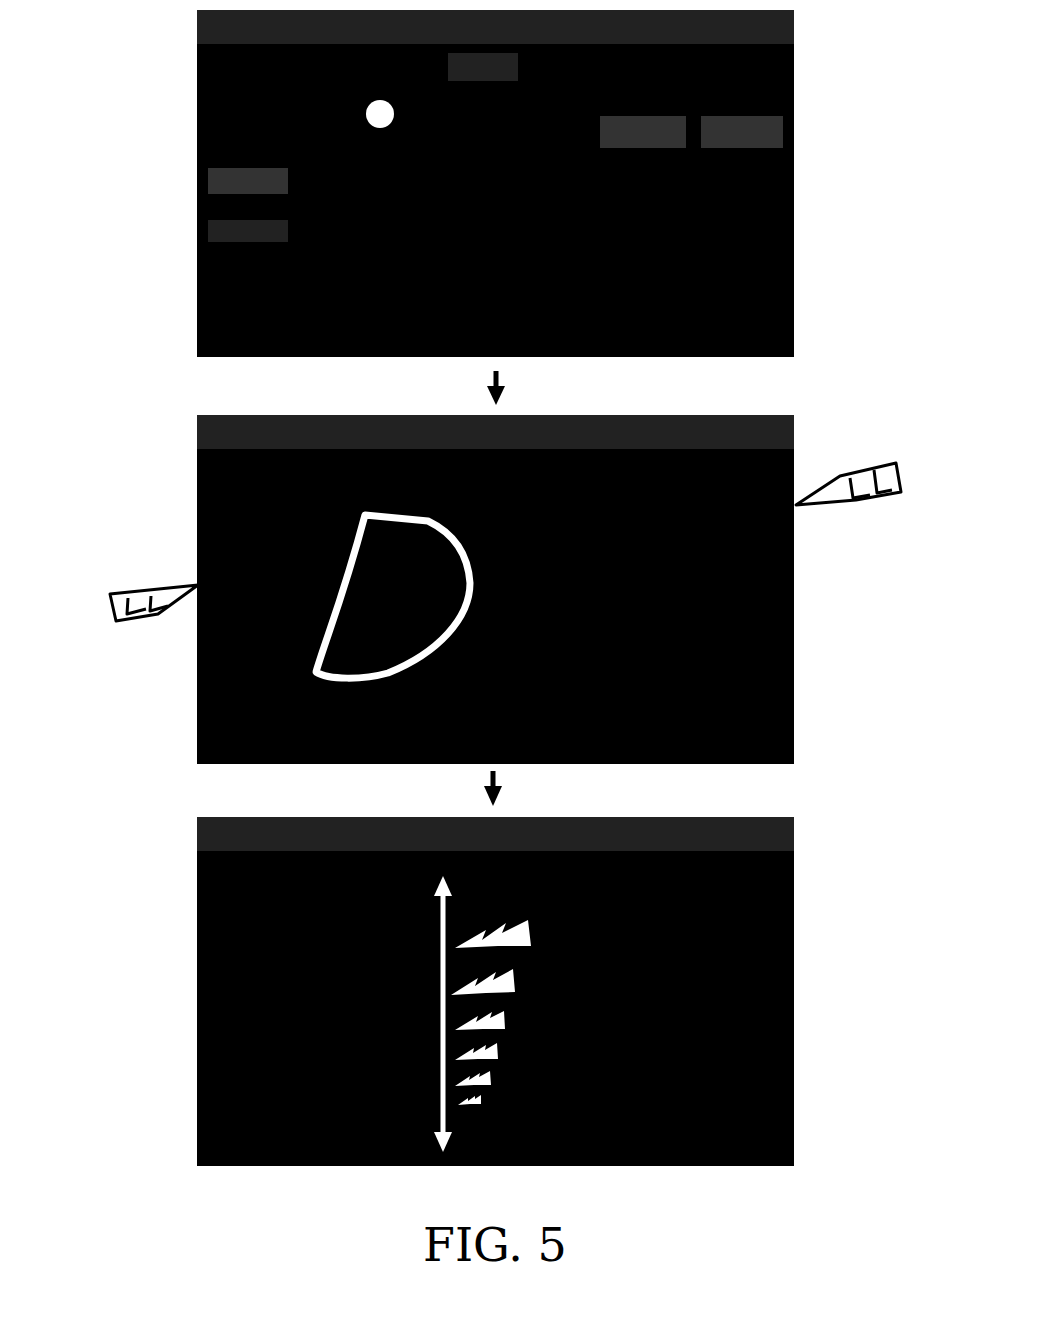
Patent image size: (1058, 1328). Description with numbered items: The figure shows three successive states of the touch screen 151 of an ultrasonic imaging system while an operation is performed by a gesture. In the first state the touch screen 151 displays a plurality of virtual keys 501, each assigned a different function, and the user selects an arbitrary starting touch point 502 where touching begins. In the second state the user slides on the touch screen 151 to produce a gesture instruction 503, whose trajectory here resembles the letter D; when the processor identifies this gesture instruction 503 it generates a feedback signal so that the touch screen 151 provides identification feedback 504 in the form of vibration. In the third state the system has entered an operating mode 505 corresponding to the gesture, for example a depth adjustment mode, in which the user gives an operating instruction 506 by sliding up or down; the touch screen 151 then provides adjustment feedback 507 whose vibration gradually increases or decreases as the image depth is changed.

The touch screen 151 is at (787, 77).
The virtual keys 501 is at (520, 64).
The starting touch point 502 is at (396, 114).
The gesture instruction 503 is at (472, 604).
The identification feedback 504 is at (123, 620).
The operating mode 505 is at (305, 906).
The operating instruction 506 is at (398, 1008).
The adjustment feedback 507 is at (515, 970).